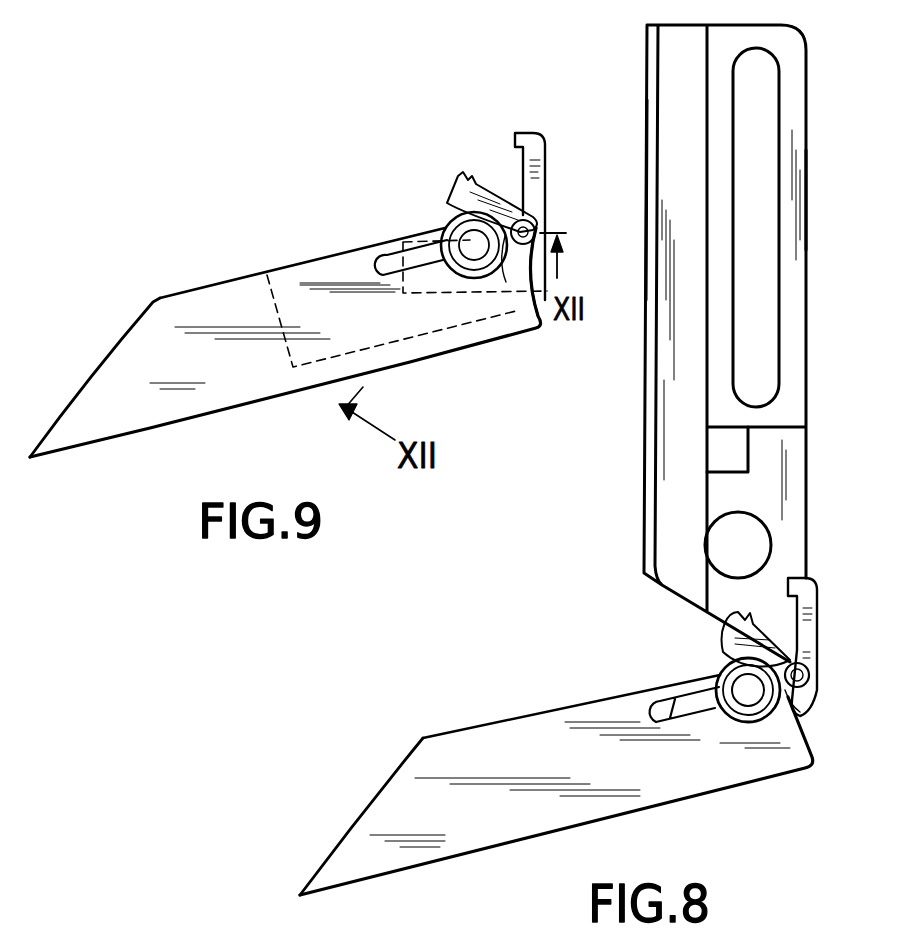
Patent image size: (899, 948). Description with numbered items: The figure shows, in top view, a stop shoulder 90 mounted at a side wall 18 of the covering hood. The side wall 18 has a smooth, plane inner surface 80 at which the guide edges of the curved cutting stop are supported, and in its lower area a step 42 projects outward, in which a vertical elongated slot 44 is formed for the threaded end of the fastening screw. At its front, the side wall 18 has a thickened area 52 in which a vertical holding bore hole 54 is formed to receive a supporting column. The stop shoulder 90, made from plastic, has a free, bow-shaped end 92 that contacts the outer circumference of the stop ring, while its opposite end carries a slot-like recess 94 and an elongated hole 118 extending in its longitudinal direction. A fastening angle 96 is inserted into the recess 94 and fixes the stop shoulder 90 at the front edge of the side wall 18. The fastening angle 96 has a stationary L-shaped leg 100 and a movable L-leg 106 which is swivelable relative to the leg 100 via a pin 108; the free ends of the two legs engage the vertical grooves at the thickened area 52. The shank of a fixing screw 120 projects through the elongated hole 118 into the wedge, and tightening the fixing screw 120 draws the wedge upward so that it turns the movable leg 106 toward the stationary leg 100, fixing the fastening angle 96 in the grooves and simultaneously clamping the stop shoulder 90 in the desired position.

In FIG. 8, the side wall 18 is at (676, 59).
In FIG. 8, the inner surface 80 is at (645, 128).
In FIG. 8, the vertical elongated slot 44 is at (765, 90).
In FIG. 8, the step 42 is at (798, 192).
In FIG. 8, the front thickened area 52 is at (782, 465).
In FIG. 8, the vertical holding bore hole 54 is at (753, 545).
In FIG. 9, the stop shoulder 90 is at (230, 302).
In FIG. 8, the stop shoulder 90 is at (473, 740).
In FIG. 9, the free bow-shaped end 92 is at (108, 362).
In FIG. 8, the free bow-shaped end 92 is at (388, 800).
In FIG. 9, the slot-like recess 94 is at (342, 282).
In FIG. 9, the fastening angle 96 is at (524, 250).
In FIG. 8, the fastening angle 96 is at (806, 689).
In FIG. 9, the L-shaped leg 100 is at (544, 159).
In FIG. 8, the L-shaped leg 100 is at (810, 595).
In FIG. 9, the movable L-leg 106 is at (453, 183).
In FIG. 8, the movable L-leg 106 is at (724, 634).
In FIG. 9, the pin 108 is at (544, 220).
In FIG. 9, the elongated hole 118 is at (411, 257).
In FIG. 8, the elongated hole 118 is at (660, 710).
In FIG. 9, the fixing screw 120 is at (480, 262).
In FIG. 8, the fixing screw 120 is at (745, 688).